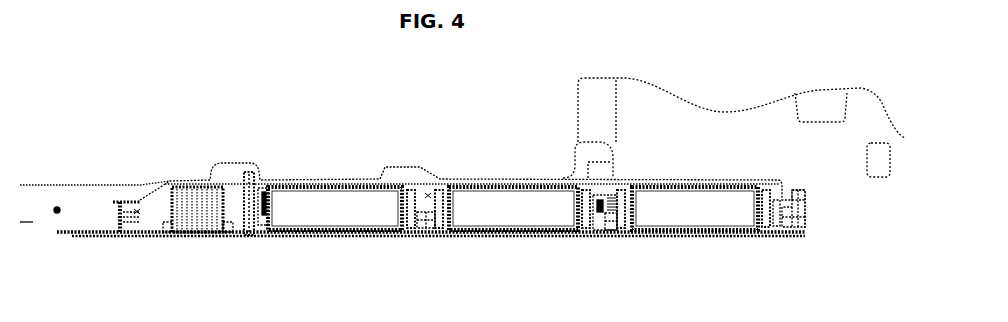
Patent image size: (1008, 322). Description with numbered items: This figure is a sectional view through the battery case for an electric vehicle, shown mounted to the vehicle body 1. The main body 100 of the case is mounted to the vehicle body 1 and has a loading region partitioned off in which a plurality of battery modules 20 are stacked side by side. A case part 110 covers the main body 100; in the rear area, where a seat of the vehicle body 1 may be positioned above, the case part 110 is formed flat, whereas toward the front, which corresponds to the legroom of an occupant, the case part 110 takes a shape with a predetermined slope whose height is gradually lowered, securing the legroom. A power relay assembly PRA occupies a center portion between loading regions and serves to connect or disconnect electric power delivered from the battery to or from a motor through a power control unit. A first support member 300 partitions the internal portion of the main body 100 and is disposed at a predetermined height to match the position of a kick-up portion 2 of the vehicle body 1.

The vehicle body 1 is at (431, 205).
The kick-up portion 2 is at (575, 144).
The battery module 20 is at (340, 210).
The main body 100 is at (150, 233).
The case part 110 is at (137, 201).
The first support member 300 is at (598, 229).
The power relay assembly PRA is at (190, 233).